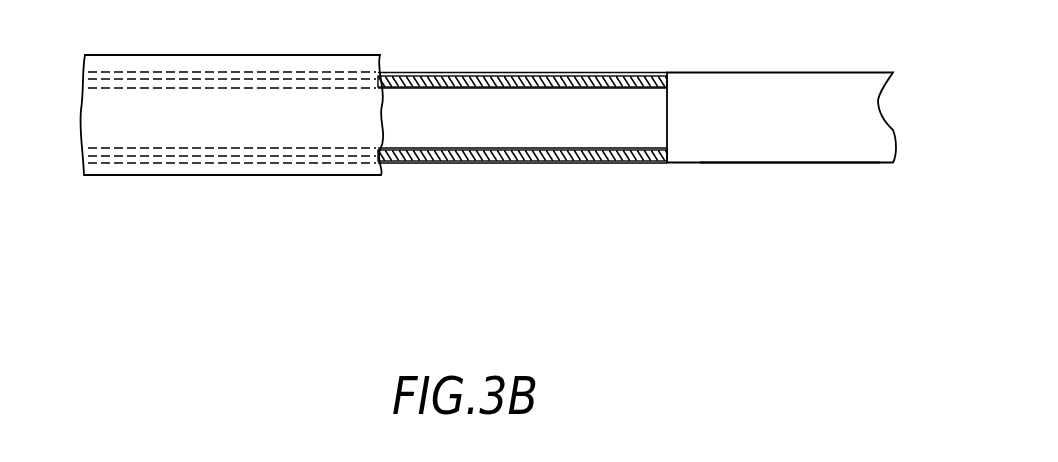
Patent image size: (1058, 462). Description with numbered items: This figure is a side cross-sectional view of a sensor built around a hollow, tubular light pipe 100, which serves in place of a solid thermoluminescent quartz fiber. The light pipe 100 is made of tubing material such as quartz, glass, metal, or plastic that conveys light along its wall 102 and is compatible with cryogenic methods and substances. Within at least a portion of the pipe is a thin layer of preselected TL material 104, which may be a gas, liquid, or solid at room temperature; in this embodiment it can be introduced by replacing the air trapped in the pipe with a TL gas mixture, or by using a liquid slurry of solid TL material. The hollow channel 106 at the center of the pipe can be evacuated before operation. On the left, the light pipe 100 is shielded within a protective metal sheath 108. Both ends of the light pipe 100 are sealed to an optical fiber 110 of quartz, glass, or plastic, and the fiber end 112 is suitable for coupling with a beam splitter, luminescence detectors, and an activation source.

The light pipe 100 is at (403, 72).
The wall 102 is at (490, 75).
The TL material 104 is at (572, 72).
The hollow channel 106 is at (552, 137).
The protective metal sheath 108 is at (225, 55).
The optical fiber 110 is at (748, 83).
The fiber end 112 is at (803, 163).